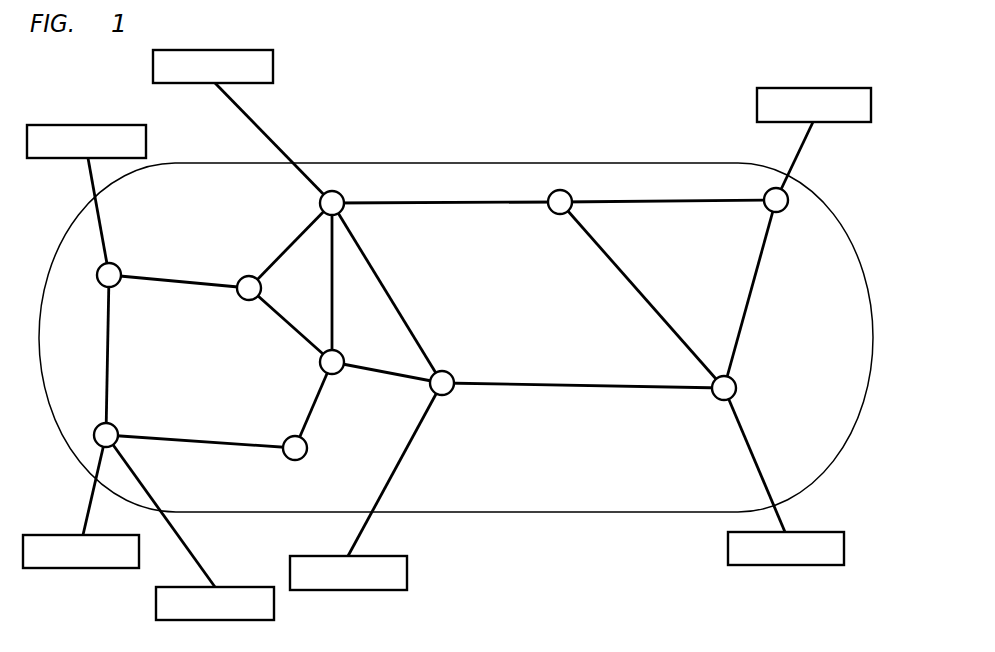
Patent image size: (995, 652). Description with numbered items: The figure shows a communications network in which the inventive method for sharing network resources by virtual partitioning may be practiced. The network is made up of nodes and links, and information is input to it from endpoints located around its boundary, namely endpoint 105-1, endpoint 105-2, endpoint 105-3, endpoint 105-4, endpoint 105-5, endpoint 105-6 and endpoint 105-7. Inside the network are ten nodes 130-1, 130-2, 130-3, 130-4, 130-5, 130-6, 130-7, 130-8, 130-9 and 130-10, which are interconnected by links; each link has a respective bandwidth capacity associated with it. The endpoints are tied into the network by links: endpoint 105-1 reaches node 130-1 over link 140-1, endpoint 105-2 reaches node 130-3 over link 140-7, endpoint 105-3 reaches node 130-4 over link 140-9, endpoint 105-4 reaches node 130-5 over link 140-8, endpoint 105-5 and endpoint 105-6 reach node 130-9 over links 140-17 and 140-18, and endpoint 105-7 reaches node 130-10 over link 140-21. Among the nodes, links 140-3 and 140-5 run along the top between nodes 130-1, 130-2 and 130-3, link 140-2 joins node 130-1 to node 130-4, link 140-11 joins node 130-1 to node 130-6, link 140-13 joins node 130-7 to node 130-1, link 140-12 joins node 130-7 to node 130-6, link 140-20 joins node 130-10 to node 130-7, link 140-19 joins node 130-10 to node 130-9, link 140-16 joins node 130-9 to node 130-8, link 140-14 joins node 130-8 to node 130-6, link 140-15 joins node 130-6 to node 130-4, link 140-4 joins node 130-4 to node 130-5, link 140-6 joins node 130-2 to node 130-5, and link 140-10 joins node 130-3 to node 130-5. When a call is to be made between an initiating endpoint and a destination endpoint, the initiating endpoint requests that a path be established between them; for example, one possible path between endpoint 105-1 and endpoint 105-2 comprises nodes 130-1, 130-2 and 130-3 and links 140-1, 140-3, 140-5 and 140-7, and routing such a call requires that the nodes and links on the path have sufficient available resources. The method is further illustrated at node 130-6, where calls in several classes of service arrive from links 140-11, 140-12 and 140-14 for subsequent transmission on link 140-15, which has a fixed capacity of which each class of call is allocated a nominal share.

The endpoint 105-1 is at (265, 48).
The endpoint 105-2 is at (813, 88).
The endpoint 105-3 is at (387, 556).
The endpoint 105-4 is at (800, 532).
The endpoint 105-5 is at (209, 620).
The endpoint 105-6 is at (90, 568).
The endpoint 105-7 is at (98, 125).
The node 130-1 is at (342, 196).
The node 130-2 is at (570, 195).
The node 130-3 is at (786, 192).
The node 130-4 is at (452, 375).
The node 130-5 is at (735, 381).
The node 130-6 is at (340, 351).
The node 130-7 is at (252, 300).
The node 130-8 is at (288, 459).
The node 130-9 is at (116, 426).
The node 130-10 is at (120, 268).
The link 140-1 is at (270, 139).
The link 140-2 is at (374, 270).
The link 140-3 is at (452, 203).
The link 140-4 is at (604, 388).
The link 140-5 is at (700, 203).
The link 140-6 is at (631, 281).
The link 140-7 is at (800, 150).
The link 140-8 is at (748, 447).
The link 140-9 is at (390, 478).
The link 140-10 is at (750, 304).
The link 140-11 is at (331, 312).
The link 140-12 is at (304, 338).
The link 140-13 is at (287, 249).
The link 140-14 is at (306, 425).
The link 140-15 is at (368, 370).
The link 140-16 is at (199, 441).
The link 140-17 is at (188, 549).
The link 140-18 is at (98, 462).
The link 140-19 is at (110, 366).
The link 140-20 is at (194, 284).
The link 140-21 is at (100, 216).